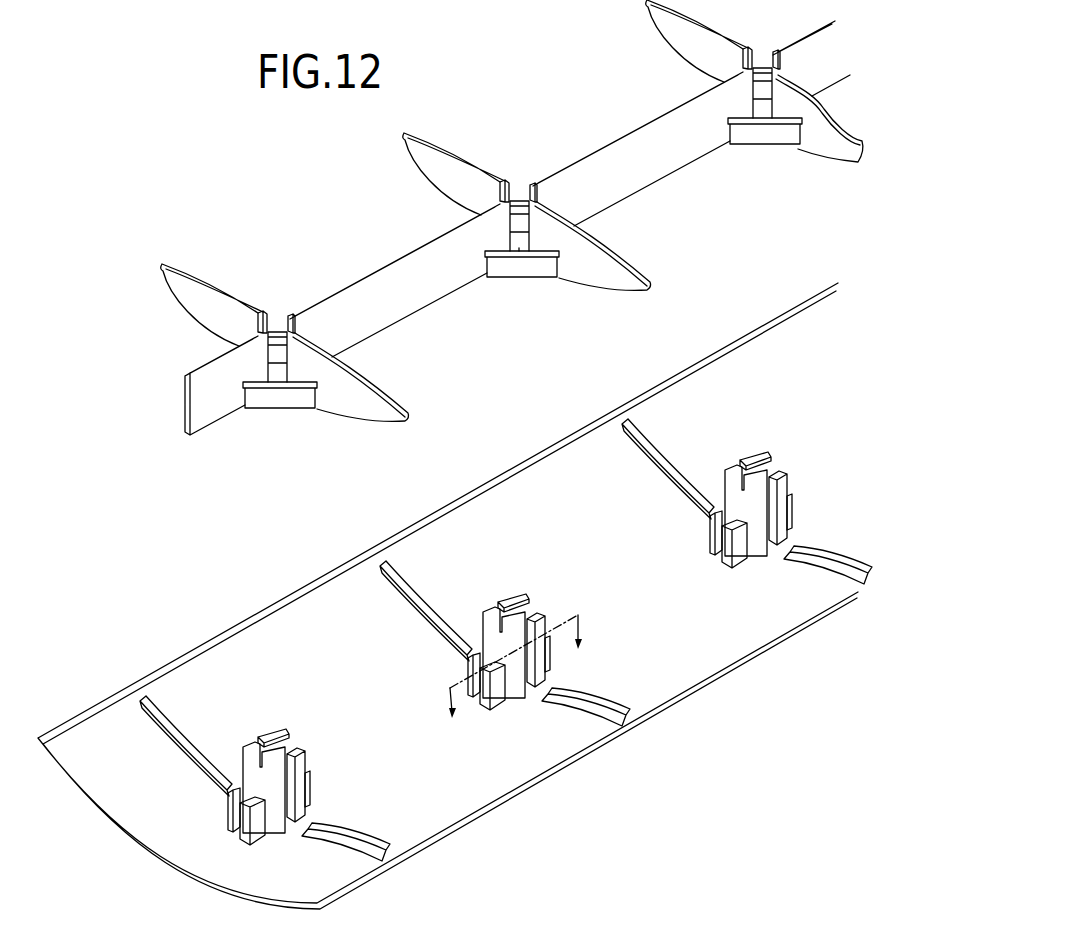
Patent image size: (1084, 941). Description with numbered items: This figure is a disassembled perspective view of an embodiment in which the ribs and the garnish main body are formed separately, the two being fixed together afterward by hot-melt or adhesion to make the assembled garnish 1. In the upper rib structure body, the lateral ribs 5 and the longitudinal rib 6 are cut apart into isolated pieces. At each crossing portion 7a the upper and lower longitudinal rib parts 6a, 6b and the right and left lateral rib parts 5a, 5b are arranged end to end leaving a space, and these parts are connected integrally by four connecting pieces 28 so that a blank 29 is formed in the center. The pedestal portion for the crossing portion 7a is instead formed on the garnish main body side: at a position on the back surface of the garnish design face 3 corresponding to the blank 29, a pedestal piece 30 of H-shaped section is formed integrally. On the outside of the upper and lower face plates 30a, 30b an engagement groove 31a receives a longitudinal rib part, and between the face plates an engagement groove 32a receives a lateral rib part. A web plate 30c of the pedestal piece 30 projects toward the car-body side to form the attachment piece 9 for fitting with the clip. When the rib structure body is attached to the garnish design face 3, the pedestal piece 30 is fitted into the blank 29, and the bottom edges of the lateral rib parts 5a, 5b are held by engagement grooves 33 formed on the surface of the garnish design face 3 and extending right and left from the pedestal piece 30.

The garnish 1 is at (238, 426).
The garnish design face 3 is at (527, 502).
The lateral ribs 5 is at (183, 297).
The right lateral rib part 5a is at (608, 282).
The left lateral rib part 5b is at (425, 165).
The longitudinal rib 6 is at (197, 365).
The upper longitudinal rib part 6a is at (392, 248).
The lower longitudinal rib part 6b is at (607, 147).
The crossing portion 7a is at (496, 221).
The attachment piece 9 is at (530, 605).
The connecting pieces 28 is at (508, 190).
The blank 29 is at (277, 307).
The pedestal piece 30 is at (551, 614).
The upper face plate 30a is at (488, 620).
The lower face plate 30b is at (532, 690).
The web plate 30c is at (545, 612).
The engagement groove 31a is at (463, 703).
The engagement groove 32a is at (552, 658).
The engagement grooves 33 is at (412, 578).